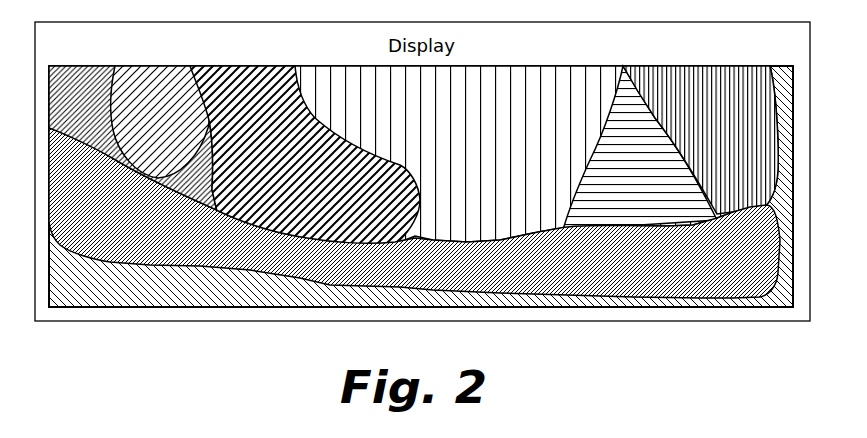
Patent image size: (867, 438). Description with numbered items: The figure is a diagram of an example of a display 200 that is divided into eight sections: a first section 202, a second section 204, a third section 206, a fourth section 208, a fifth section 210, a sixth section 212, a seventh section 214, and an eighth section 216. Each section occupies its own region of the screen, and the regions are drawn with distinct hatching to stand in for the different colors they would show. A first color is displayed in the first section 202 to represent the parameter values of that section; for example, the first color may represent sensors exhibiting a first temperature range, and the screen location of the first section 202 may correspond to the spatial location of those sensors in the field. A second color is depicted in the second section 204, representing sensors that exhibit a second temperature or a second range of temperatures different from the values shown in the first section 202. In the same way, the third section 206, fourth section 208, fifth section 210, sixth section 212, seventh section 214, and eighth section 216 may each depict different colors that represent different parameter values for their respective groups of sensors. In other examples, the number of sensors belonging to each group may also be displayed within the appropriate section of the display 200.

The display 200 is at (726, 52).
The first section 202 is at (330, 103).
The second section 204 is at (237, 113).
The third section 206 is at (153, 113).
The fourth section 208 is at (82, 110).
The fifth section 210 is at (632, 137).
The sixth section 212 is at (700, 107).
The seventh section 214 is at (167, 280).
The eighth section 216 is at (617, 278).